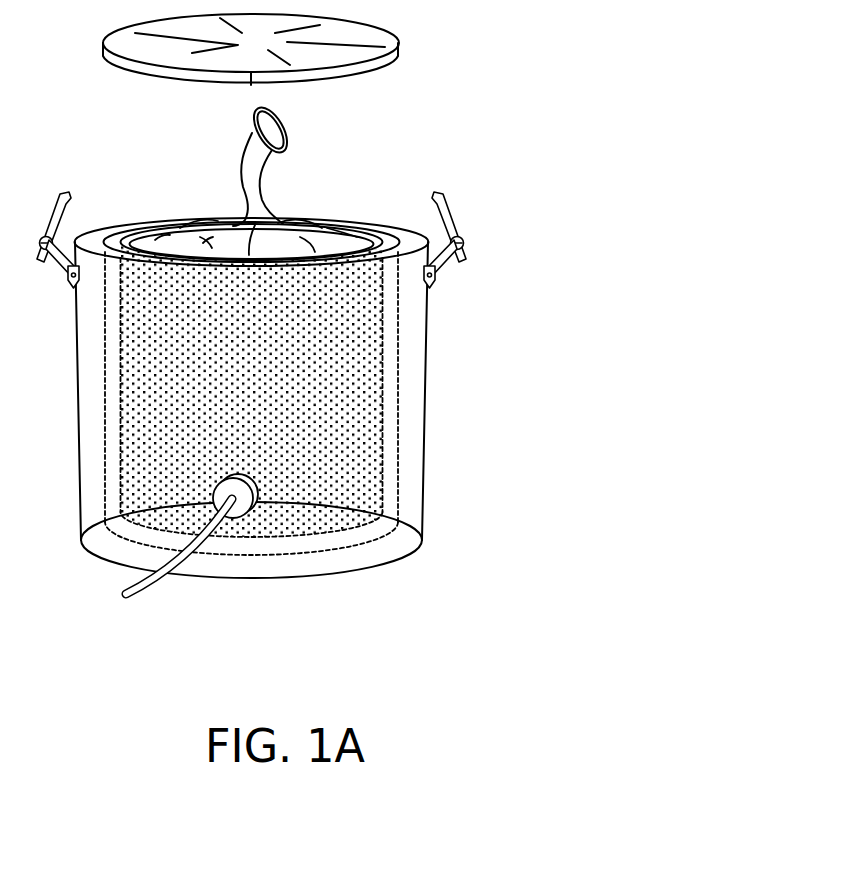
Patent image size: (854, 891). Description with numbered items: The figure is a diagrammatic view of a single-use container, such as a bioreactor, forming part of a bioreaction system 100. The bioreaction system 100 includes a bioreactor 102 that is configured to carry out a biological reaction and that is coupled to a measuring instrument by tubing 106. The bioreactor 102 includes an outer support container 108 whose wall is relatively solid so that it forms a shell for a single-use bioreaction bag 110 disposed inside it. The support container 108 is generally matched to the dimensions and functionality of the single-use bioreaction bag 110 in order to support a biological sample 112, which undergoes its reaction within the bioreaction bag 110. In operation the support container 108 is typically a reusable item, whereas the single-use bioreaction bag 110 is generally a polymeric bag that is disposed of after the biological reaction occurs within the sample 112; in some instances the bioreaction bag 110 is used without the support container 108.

The bioreaction system 100 is at (372, 329).
The bioreactor 102 is at (277, 373).
The tubing 106 is at (163, 579).
The outer support container 108 is at (423, 452).
The single-use bioreaction bag 110 is at (342, 235).
The biological sample 112 is at (342, 328).